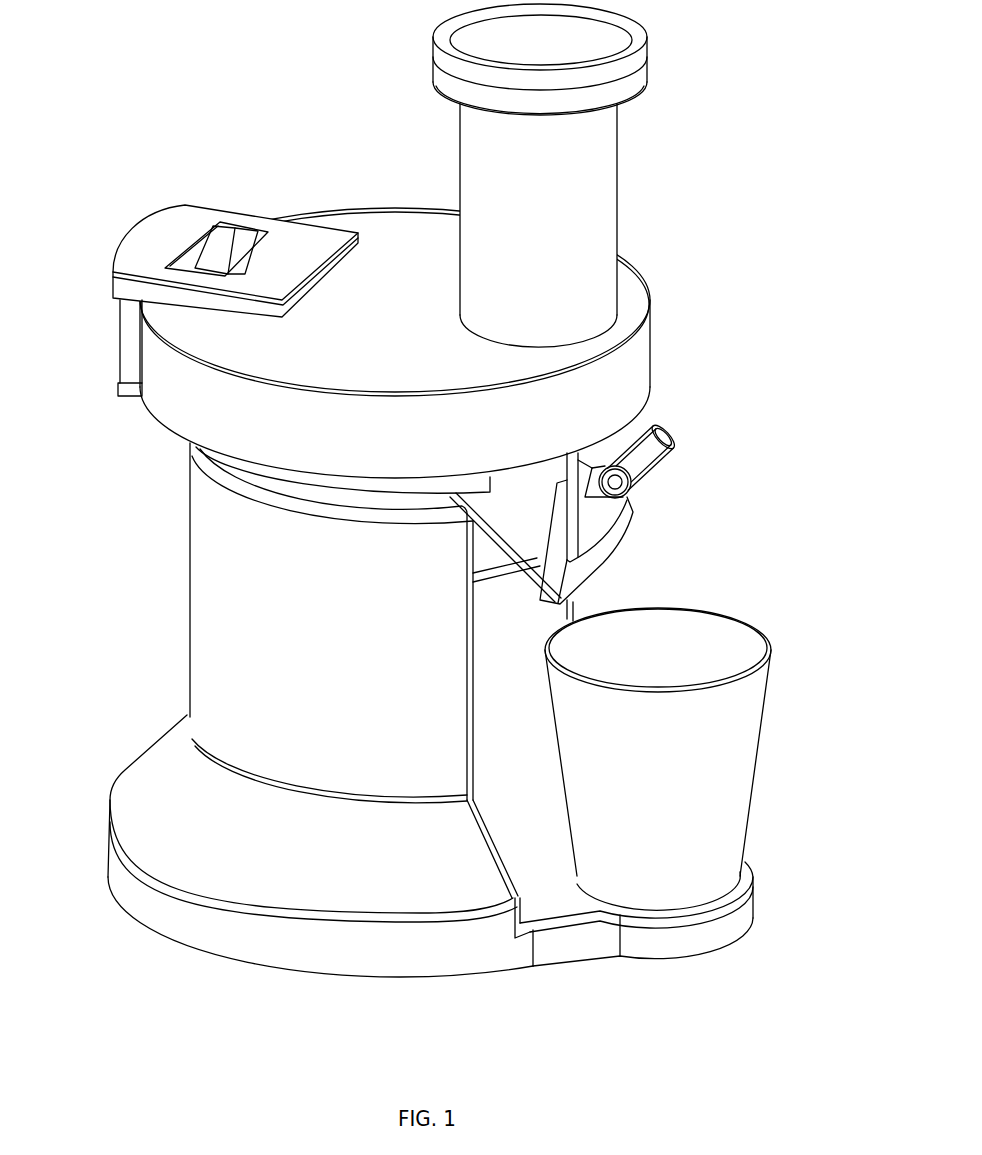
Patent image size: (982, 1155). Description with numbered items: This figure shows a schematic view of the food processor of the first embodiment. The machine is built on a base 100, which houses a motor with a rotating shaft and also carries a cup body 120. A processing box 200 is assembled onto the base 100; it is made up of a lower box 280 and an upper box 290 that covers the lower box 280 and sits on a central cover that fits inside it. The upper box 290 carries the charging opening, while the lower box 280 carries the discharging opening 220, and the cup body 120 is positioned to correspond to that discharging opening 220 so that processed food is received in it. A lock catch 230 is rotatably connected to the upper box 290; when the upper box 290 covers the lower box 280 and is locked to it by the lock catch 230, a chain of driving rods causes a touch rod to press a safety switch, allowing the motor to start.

The base 100 is at (237, 833).
The cup body 120 is at (670, 760).
The processing box 200 is at (658, 373).
The discharging opening 220 is at (583, 580).
The lock catch 230 is at (205, 229).
The lower box 280 is at (623, 378).
The upper box 290 is at (398, 255).